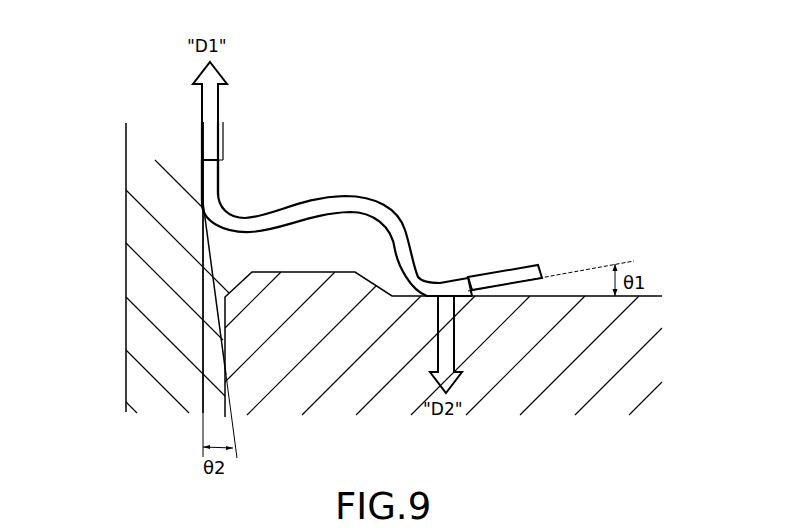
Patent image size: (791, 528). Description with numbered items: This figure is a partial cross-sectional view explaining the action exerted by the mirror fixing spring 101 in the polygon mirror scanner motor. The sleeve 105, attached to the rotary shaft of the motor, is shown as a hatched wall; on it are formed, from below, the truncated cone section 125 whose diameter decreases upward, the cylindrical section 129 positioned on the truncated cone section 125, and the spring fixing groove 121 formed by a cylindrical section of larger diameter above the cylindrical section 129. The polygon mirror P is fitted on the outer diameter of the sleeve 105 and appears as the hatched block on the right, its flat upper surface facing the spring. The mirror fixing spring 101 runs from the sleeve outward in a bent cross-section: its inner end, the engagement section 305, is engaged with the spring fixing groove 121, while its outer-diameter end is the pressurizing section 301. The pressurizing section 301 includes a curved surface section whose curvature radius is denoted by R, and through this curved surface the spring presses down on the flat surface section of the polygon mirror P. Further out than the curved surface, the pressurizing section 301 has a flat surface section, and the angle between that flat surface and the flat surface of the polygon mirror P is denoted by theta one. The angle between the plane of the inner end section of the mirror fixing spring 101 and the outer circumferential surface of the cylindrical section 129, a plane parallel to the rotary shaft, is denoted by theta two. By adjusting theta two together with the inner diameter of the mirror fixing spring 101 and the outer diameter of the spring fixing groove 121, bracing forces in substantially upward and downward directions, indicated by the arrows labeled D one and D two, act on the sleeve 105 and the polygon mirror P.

The mirror fixing spring 101 is at (360, 197).
The sleeve 105 is at (133, 167).
The spring fixing groove 121 is at (202, 158).
The truncated cone section 125 is at (208, 301).
The cylindrical section 129 is at (205, 240).
The pressurizing section 301 is at (515, 272).
The engagement section 305 is at (212, 175).
The polygon mirror P is at (575, 390).
The curvature radius of the curved surface section R is at (420, 275).